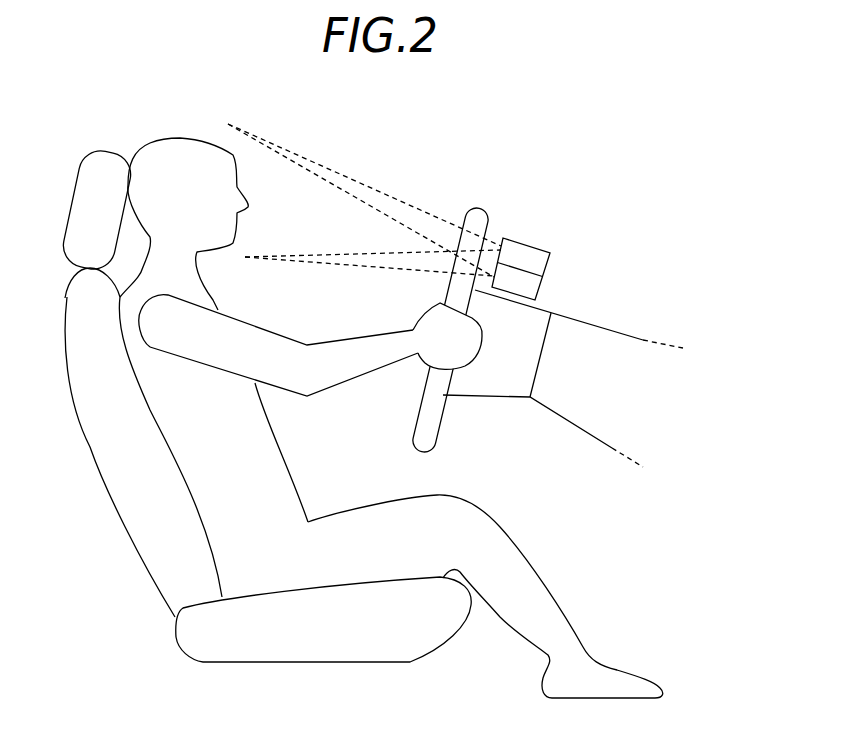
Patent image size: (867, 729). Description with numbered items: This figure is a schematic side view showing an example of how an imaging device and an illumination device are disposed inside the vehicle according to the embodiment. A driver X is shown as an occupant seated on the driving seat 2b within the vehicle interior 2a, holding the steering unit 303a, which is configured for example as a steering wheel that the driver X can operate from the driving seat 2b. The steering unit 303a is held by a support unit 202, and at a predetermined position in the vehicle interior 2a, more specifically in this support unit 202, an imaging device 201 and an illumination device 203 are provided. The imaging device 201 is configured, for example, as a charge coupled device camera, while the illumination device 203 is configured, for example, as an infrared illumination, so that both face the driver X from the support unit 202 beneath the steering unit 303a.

The vehicle interior 2a is at (602, 182).
The driving seat 2b is at (176, 632).
The imaging device 201 is at (545, 295).
The support unit 202 is at (542, 313).
The illumination device 203 is at (525, 243).
The steering unit 303a is at (480, 208).
The driver X is at (184, 137).